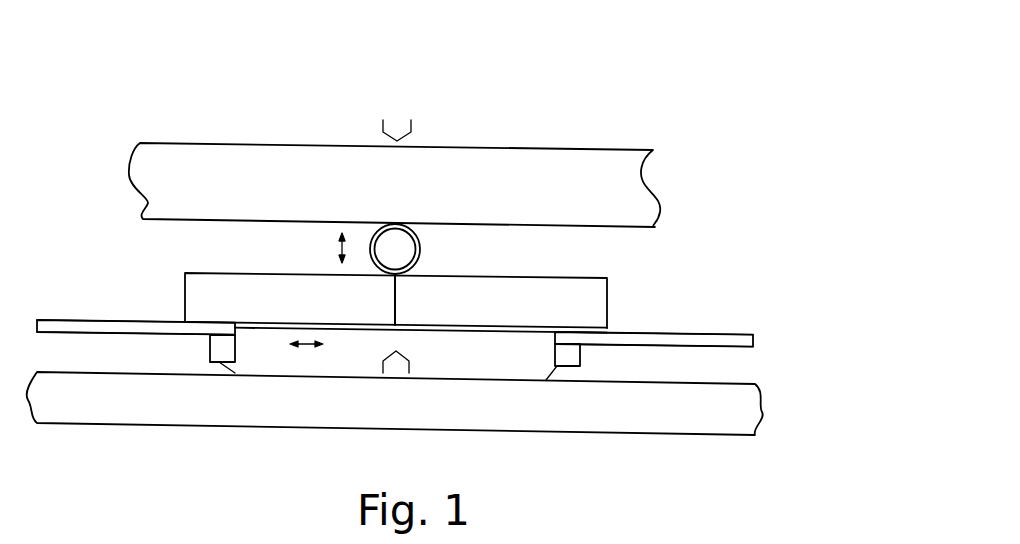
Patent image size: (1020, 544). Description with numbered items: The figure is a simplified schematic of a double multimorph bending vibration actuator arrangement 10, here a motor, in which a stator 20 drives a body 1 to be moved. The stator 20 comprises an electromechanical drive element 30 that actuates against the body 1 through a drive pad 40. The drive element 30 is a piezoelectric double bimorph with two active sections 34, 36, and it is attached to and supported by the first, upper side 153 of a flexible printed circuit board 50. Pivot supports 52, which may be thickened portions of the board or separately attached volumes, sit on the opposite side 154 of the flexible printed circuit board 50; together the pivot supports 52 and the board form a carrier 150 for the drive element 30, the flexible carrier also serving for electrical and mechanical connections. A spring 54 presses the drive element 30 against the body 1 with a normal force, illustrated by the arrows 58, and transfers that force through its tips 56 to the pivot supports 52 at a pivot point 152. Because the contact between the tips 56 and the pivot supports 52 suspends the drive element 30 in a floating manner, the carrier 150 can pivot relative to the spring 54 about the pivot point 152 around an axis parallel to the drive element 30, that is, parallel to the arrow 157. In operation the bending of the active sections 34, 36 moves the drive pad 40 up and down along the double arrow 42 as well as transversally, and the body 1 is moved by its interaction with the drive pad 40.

The double multimorph bending vibration actuator arrangement 10 is at (230, 102).
The body to be moved 1 is at (580, 165).
The arrows 58 is at (417, 243).
The double arrow 42 is at (322, 248).
The drive pad 40 is at (420, 250).
The electromechanical drive element 30 is at (608, 290).
The active section 36 is at (350, 287).
The active section 34 is at (465, 288).
The stator 20 is at (752, 301).
The flexible printed circuit board 50 is at (95, 320).
The first side 153 is at (45, 320).
The opposite side 154 is at (67, 334).
The carrier 150 is at (170, 344).
The pivot supports 52 is at (237, 345).
The arrow 157 is at (310, 357).
The pivot point 152 is at (213, 364).
The tips 56 is at (230, 378).
The spring 54 is at (678, 420).